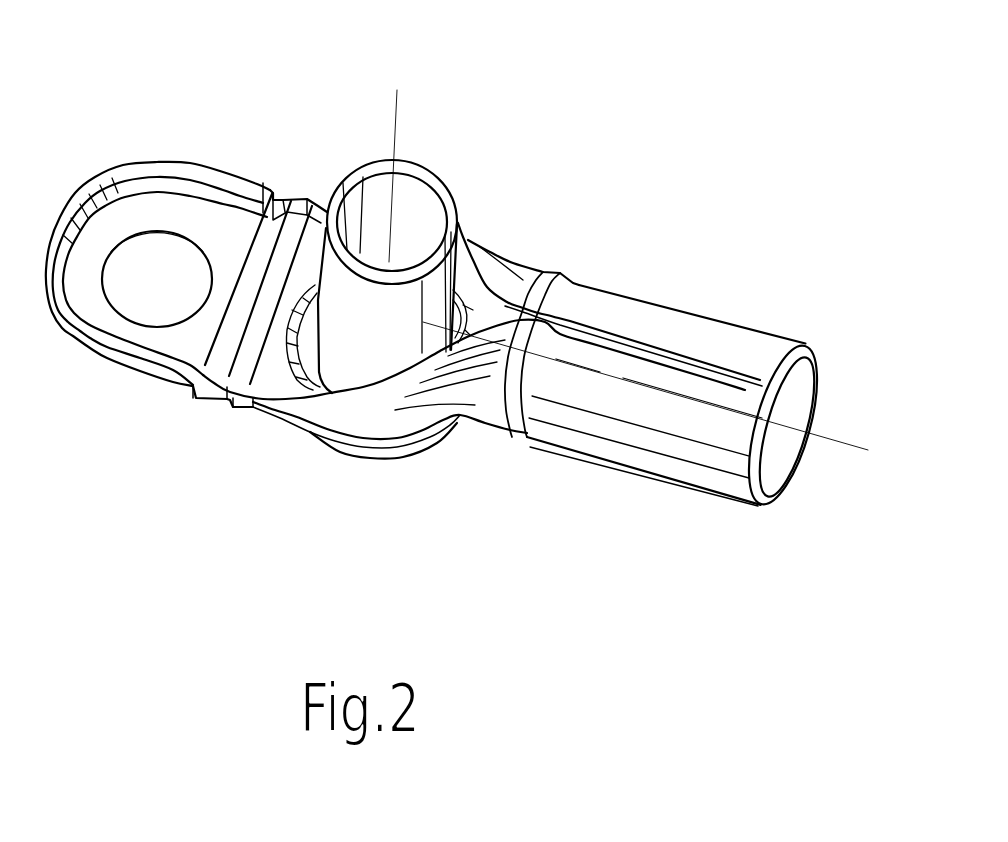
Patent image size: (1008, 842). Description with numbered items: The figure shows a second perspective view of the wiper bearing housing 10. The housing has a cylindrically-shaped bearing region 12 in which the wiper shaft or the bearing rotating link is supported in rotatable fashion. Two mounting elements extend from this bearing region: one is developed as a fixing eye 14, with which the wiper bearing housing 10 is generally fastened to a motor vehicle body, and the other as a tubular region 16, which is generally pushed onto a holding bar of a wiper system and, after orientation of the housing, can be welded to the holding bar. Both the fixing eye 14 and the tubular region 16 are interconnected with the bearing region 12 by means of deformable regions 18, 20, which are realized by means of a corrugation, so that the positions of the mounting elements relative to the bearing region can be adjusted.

The wiper bearing housing 10 is at (718, 183).
The bearing region 12 is at (440, 173).
The fixing eye 14 is at (97, 347).
The tubular region 16 is at (757, 507).
The deformable region 18 is at (217, 400).
The deformable region 20 is at (525, 440).